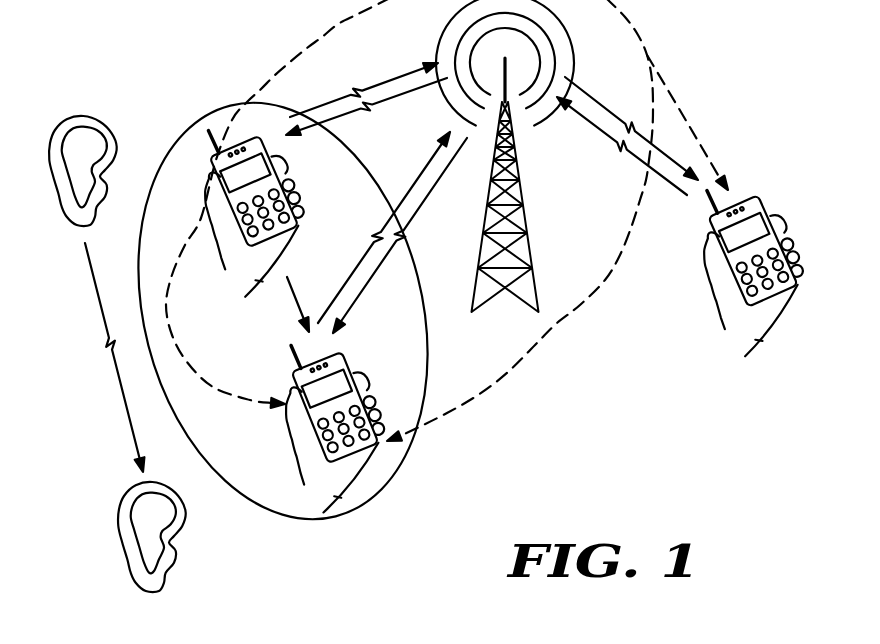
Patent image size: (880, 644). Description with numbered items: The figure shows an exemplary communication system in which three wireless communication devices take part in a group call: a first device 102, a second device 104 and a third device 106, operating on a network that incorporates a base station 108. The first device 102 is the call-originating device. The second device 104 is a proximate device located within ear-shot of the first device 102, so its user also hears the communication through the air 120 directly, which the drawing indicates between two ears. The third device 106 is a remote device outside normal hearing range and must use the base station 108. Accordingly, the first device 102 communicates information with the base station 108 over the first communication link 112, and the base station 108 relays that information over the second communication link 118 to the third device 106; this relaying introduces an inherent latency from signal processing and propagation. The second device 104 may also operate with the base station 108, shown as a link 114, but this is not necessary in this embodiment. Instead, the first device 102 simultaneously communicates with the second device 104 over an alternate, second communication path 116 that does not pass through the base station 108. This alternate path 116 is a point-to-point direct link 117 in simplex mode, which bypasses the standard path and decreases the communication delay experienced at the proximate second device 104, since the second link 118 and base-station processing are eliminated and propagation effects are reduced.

The first device 102 is at (306, 212).
The second device 104 is at (297, 447).
The third device 106 is at (708, 300).
The base station 108 is at (522, 210).
The first communication link 112 is at (390, 85).
The wireless link between base station and second device 114 is at (415, 218).
The second communication path 116 is at (216, 390).
The direct link 117 is at (292, 316).
The second communication link 118 is at (675, 158).
The air 120 is at (110, 362).